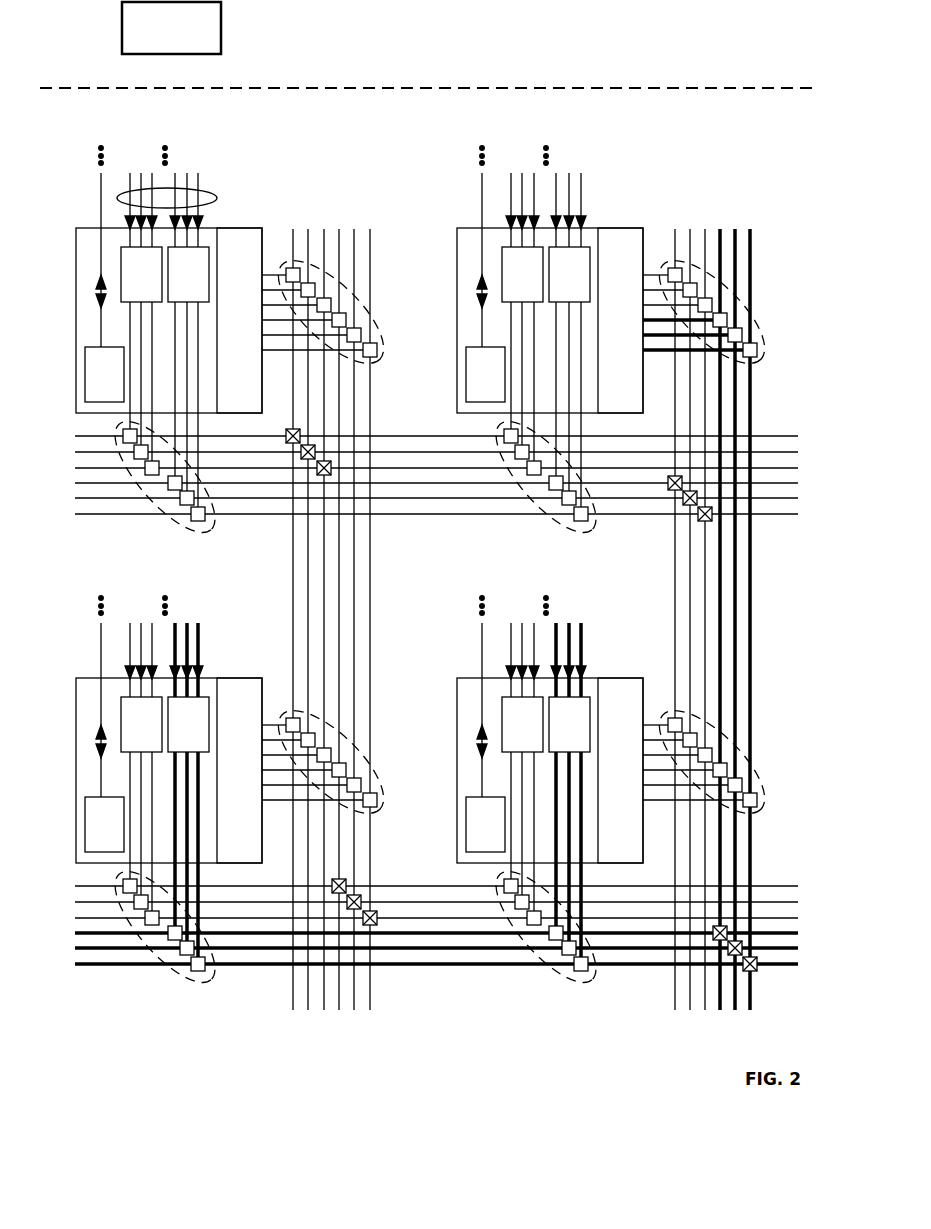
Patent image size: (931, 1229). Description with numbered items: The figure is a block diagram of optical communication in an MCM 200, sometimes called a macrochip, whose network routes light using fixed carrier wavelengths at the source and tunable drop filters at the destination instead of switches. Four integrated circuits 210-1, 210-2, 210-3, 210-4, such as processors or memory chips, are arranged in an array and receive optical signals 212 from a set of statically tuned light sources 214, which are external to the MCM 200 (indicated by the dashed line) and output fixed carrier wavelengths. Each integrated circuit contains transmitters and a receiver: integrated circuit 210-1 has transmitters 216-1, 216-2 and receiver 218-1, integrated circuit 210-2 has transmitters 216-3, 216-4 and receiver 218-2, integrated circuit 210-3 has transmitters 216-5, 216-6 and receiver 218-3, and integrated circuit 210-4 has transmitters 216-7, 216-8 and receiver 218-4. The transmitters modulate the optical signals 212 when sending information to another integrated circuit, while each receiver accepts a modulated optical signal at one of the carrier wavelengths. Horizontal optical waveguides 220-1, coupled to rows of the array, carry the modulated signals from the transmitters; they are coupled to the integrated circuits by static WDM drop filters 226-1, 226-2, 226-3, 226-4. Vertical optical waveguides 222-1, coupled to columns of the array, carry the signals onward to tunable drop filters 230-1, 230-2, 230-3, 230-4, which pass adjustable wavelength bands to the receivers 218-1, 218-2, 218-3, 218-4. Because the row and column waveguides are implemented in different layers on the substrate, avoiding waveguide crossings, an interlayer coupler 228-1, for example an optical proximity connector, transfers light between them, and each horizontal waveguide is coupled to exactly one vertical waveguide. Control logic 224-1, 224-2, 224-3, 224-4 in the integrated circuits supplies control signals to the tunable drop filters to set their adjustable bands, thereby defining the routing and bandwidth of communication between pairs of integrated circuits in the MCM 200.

The MCM 200 is at (718, 148).
The statically tuned light sources 214 is at (158, 53).
The integrated circuit 210-1 is at (76, 228).
The integrated circuit 210-2 is at (457, 228).
The integrated circuit 210-3 is at (76, 678).
The integrated circuit 210-4 is at (457, 678).
The optical signals 212 is at (203, 187).
The transmitter 216-1 is at (129, 287).
The transmitter 216-2 is at (176, 287).
The transmitter 216-3 is at (510, 287).
The transmitter 216-4 is at (557, 287).
The transmitter 216-5 is at (129, 737).
The transmitter 216-6 is at (176, 737).
The transmitter 216-7 is at (510, 737).
The transmitter 216-8 is at (557, 737).
The receiver 218-1 is at (257, 296).
The receiver 218-2 is at (638, 296).
The receiver 218-3 is at (257, 746).
The receiver 218-4 is at (638, 746).
The optical waveguides 220-1 is at (58, 886).
The optical waveguides 222-1 is at (293, 215).
The control logic 224-1 is at (93, 385).
The control logic 224-2 is at (474, 385).
The control logic 224-3 is at (93, 835).
The control logic 224-4 is at (474, 835).
The drop filters 226-1 is at (167, 517).
The drop filters 226-2 is at (549, 517).
The drop filters 226-3 is at (170, 970).
The drop filters 226-4 is at (558, 972).
The interlayer coupler 228-1 is at (685, 503).
The tunable drop filters 230-1 is at (300, 317).
The tunable drop filters 230-2 is at (667, 253).
The tunable drop filters 230-3 is at (300, 767).
The tunable drop filters 230-4 is at (685, 762).